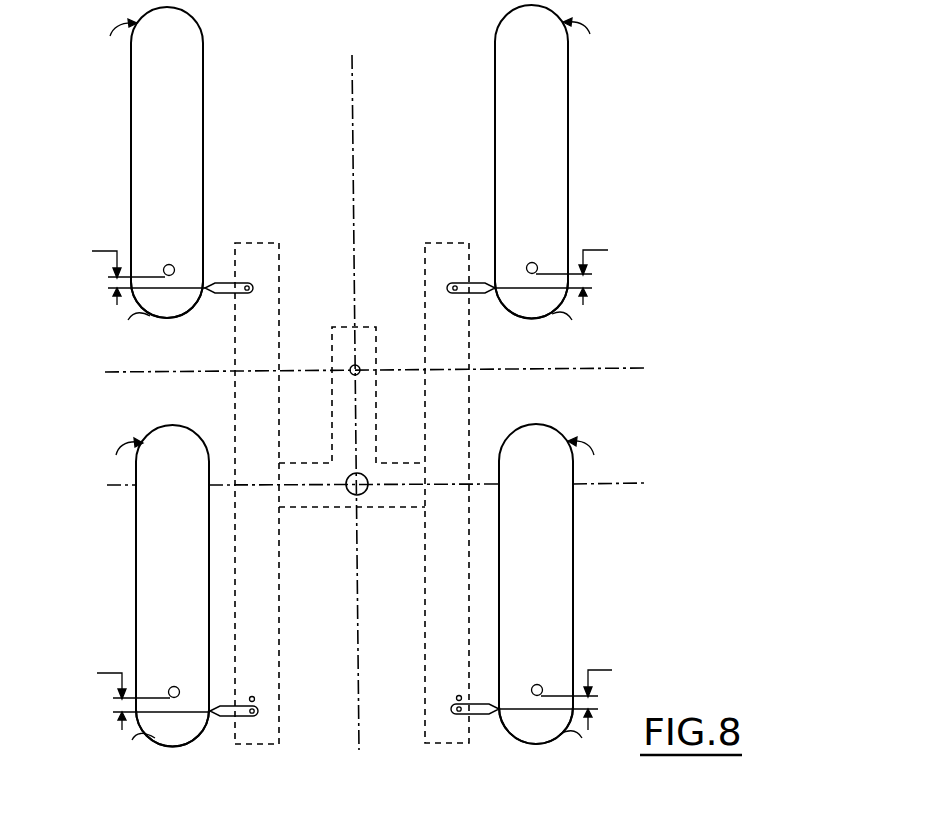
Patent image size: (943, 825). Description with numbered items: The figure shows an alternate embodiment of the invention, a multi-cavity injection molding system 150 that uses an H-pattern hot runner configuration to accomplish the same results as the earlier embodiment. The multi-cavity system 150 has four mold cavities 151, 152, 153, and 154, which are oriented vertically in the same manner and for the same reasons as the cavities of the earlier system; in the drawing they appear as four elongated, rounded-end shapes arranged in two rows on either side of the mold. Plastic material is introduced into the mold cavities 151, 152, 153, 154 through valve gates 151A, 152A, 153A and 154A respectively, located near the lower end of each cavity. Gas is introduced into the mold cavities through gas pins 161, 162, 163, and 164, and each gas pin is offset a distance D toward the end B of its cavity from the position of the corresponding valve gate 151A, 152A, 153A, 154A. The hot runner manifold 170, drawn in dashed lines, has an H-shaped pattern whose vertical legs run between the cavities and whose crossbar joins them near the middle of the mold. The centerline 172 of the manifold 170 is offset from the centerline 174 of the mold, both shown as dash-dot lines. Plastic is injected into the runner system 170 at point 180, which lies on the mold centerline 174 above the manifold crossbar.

The multi-cavity system 150 is at (703, 227).
The mold cavity 151 is at (204, 128).
The mold cavity 152 is at (569, 101).
The mold cavity 153 is at (136, 510).
The mold cavity 154 is at (573, 530).
The valve gate 151A is at (207, 300).
The valve gate 152A is at (492, 292).
The valve gate 153A is at (212, 722).
The valve gate 154A is at (500, 722).
The gas pin 161 is at (168, 264).
The gas pin 162 is at (532, 262).
The gas pin 163 is at (174, 686).
The gas pin 164 is at (537, 684).
The hot runner manifold 170 is at (320, 509).
The centerline of the manifold 172 is at (618, 483).
The centerline of the mold 174 is at (620, 368).
The injection point 180 is at (359, 368).